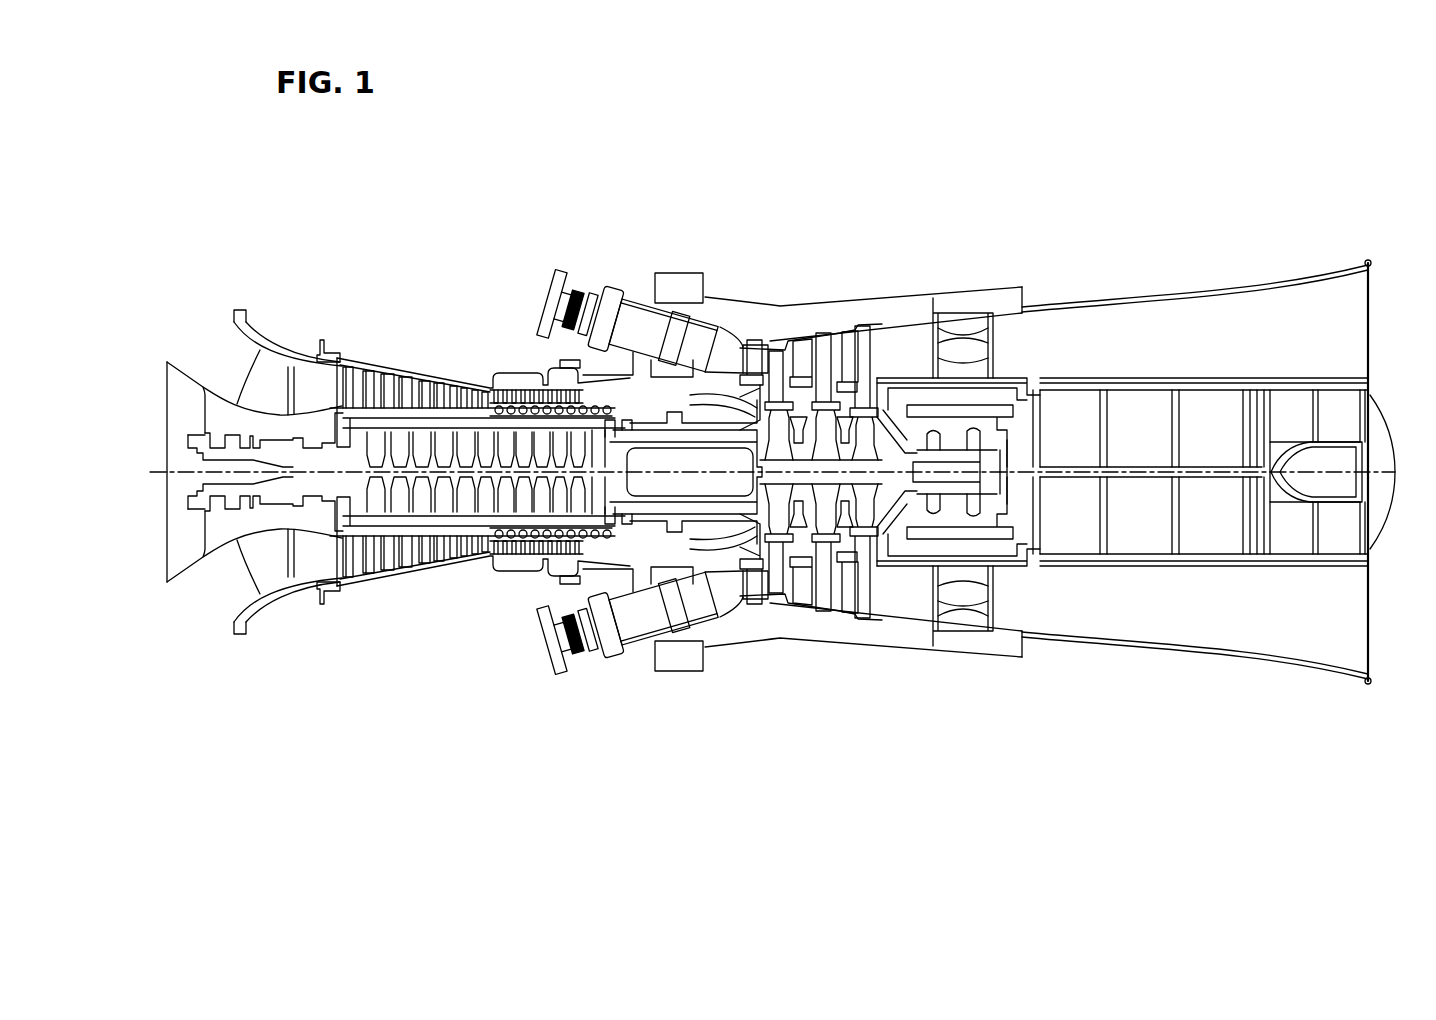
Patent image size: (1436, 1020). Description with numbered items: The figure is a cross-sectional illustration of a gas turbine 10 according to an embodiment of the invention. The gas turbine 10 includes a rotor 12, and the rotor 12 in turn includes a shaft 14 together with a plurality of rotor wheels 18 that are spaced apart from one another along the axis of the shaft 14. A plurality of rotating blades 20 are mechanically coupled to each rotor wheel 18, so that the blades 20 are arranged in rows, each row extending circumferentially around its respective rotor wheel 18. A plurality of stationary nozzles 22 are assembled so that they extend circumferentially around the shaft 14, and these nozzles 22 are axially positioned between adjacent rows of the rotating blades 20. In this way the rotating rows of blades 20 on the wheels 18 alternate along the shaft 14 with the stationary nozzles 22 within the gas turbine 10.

The gas turbine 10 is at (570, 212).
The rotor 12 is at (768, 372).
The shaft 14 is at (952, 447).
The rotor wheels 18 is at (878, 390).
The rotating blades 20 is at (868, 357).
The stationary nozzles 22 is at (802, 354).